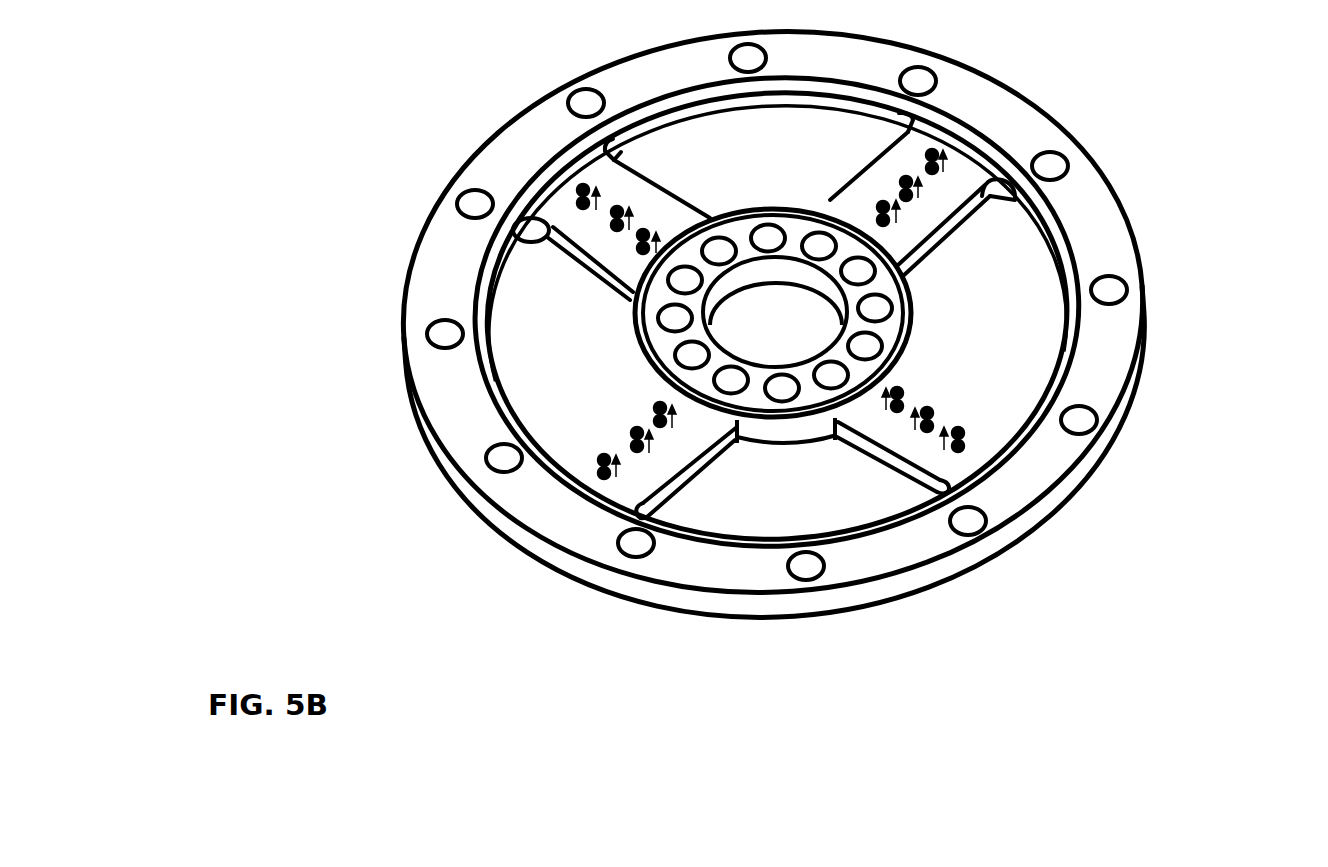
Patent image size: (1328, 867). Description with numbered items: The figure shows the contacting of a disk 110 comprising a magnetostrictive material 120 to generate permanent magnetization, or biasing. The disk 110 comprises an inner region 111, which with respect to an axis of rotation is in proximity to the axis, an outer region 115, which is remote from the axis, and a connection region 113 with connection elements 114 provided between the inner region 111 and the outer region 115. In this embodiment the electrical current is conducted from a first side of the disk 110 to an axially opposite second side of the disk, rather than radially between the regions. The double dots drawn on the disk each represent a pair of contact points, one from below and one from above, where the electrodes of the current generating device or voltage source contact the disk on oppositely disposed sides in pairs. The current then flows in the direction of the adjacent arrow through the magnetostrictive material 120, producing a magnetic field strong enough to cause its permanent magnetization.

The disk 110 is at (1150, 182).
The inner region 111 is at (665, 345).
The connection region 113 is at (600, 226).
The connection element 114 is at (764, 315).
The outer region 115 is at (1100, 365).
The magnetostrictive material 120 is at (952, 398).